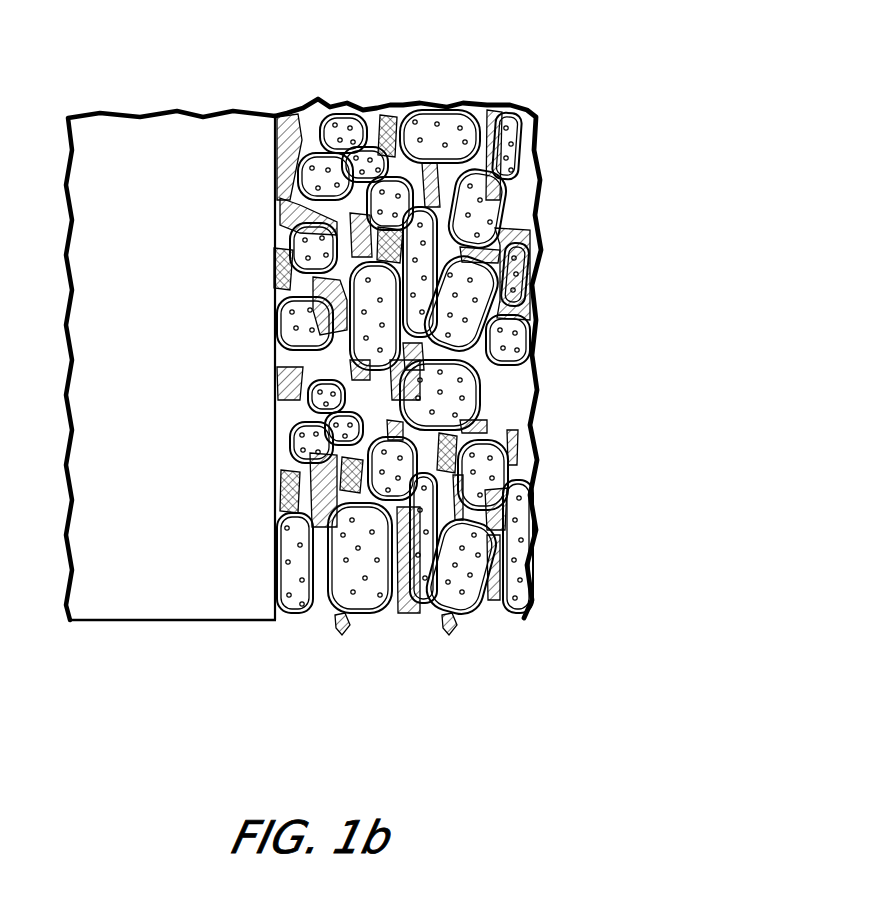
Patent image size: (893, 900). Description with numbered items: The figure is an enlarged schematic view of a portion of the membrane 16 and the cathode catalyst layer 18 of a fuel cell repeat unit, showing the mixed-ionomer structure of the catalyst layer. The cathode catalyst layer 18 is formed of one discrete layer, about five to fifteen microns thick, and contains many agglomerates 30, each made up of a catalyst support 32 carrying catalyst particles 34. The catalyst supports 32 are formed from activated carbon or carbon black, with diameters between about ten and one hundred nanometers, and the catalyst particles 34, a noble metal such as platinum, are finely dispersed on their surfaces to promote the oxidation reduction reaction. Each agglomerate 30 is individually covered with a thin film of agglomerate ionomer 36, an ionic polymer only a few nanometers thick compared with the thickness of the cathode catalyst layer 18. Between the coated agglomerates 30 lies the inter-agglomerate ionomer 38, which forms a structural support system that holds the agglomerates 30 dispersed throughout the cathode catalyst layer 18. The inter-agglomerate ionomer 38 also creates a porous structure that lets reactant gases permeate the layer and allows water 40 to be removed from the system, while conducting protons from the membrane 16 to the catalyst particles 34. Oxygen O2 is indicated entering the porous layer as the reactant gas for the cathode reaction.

The membrane 16 is at (184, 368).
The cathode catalyst layer 18 is at (320, 635).
The agglomerate 30 is at (364, 90).
The catalyst support 32 is at (316, 100).
The catalyst particle 34 is at (303, 180).
The agglomerate ionomer 36 is at (391, 124).
The inter-agglomerate ionomer 38 is at (288, 114).
The water 40 is at (472, 442).
The oxygen O2 is at (428, 340).